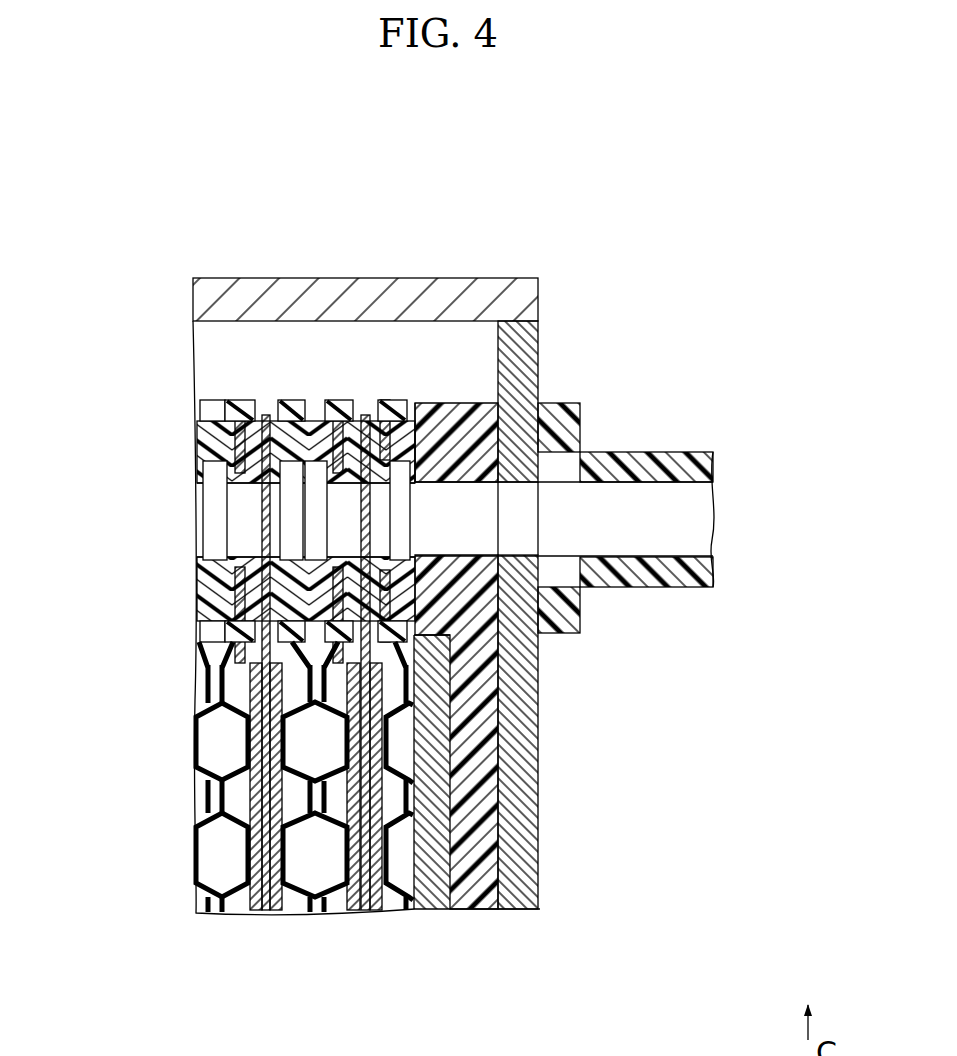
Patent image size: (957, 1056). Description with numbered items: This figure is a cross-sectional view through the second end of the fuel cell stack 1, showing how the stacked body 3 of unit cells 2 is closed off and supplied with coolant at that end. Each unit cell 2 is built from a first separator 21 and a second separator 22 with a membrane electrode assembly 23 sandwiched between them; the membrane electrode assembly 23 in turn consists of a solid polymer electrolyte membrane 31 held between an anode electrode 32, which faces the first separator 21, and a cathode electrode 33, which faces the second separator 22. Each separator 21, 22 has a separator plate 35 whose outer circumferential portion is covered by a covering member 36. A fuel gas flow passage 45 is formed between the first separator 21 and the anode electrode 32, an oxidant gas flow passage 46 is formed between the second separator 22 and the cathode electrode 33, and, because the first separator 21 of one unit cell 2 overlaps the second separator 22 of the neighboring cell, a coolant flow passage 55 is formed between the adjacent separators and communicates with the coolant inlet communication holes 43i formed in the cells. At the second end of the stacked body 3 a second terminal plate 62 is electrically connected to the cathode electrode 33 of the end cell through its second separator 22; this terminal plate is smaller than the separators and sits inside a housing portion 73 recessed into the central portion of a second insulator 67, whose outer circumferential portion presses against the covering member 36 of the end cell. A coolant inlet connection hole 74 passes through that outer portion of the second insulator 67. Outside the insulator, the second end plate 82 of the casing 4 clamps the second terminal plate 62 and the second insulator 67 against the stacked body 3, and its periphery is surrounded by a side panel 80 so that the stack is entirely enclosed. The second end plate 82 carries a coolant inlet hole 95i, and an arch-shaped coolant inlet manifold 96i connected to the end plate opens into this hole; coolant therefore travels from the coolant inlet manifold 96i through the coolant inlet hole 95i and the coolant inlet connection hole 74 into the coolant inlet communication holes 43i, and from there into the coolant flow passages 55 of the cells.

The fuel cell stack 1 is at (647, 251).
The unit cell 2 is at (224, 400).
The stacked body 3 is at (188, 414).
The casing 4 is at (207, 276).
The first separator 21 is at (316, 420).
The second separator 22 is at (365, 407).
The membrane electrode assembly 23 is at (338, 397).
The solid polymer electrolyte membrane 31 is at (367, 912).
The anode electrode 32 is at (358, 910).
The cathode electrode 33 is at (375, 912).
The separator plate 35 is at (320, 908).
The covering member 36 is at (323, 427).
The coolant inlet communication hole 43i is at (407, 495).
The fuel gas flow passage 45 is at (338, 792).
The oxidant gas flow passage 46 is at (402, 805).
The coolant flow passage 55 is at (320, 849).
The second terminal plate 62 is at (443, 878).
The second insulator 67 is at (468, 411).
The housing portion 73 is at (447, 636).
The coolant inlet connection hole 74 is at (487, 495).
The side panel 80 is at (398, 412).
The second end plate 82 is at (527, 867).
The coolant inlet hole 95i is at (532, 494).
The coolant inlet manifold 96i is at (680, 452).